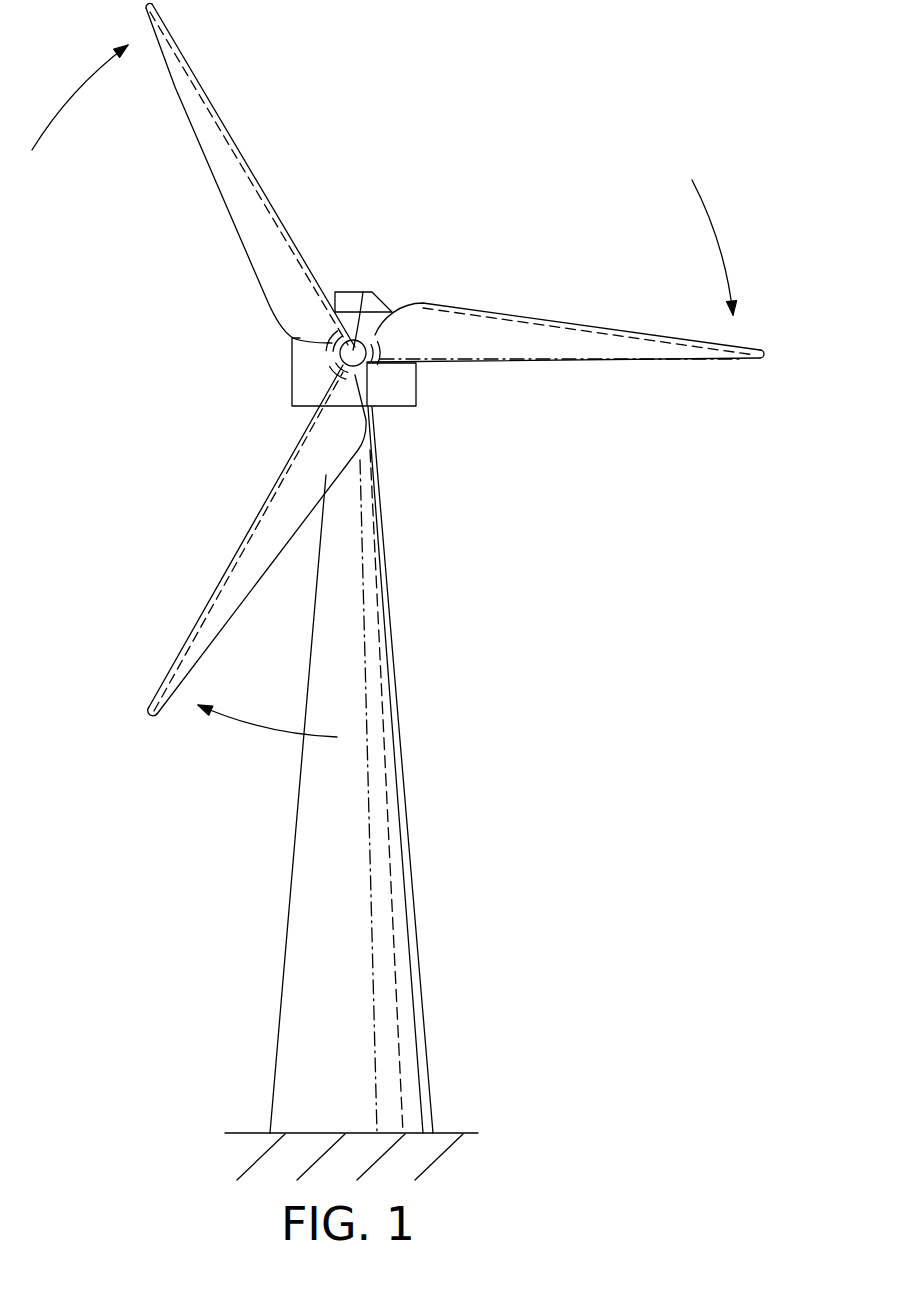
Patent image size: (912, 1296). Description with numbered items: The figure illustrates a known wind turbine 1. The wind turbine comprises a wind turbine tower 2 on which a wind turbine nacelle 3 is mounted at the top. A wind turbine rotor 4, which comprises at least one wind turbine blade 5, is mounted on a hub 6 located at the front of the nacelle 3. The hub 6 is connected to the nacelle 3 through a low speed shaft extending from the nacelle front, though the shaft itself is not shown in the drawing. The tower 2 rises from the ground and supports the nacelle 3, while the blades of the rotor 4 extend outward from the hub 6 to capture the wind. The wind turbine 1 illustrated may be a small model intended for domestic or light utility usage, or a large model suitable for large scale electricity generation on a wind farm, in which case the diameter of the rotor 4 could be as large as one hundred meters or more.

The wind turbine 1 is at (398, 591).
The wind turbine tower 2 is at (410, 818).
The wind turbine nacelle 3 is at (408, 387).
The wind turbine rotor 4 is at (398, 370).
The wind turbine blade 5 is at (552, 328).
The hub 6 is at (353, 350).